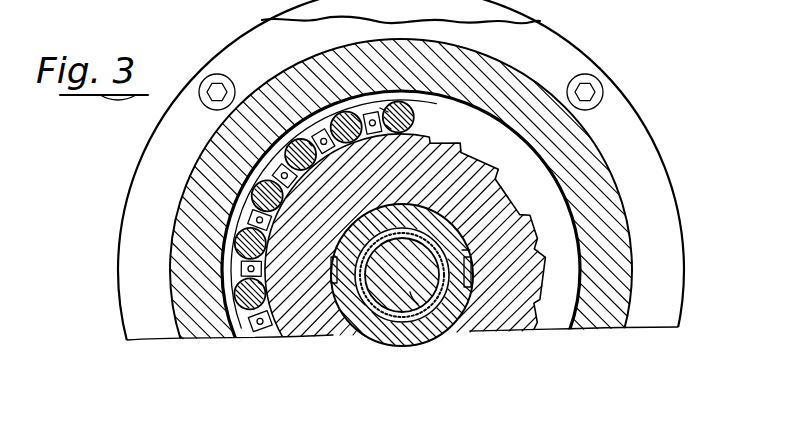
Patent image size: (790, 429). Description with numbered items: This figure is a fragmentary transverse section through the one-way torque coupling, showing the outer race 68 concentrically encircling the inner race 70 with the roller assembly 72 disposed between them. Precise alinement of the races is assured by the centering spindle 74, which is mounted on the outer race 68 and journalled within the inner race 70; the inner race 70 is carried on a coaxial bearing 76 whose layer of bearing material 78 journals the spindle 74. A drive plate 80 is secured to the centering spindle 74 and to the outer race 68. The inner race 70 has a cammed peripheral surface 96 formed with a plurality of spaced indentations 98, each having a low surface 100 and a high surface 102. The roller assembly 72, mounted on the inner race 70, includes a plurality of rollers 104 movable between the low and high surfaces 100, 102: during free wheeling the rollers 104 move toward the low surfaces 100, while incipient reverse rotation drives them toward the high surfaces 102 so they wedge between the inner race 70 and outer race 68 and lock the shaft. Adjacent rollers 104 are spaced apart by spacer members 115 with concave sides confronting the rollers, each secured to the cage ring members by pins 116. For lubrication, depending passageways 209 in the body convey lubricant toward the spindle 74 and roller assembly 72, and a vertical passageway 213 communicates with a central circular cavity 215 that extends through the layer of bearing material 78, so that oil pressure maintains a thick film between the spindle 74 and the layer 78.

The outer race 68 is at (216, 322).
The inner race 70 is at (292, 337).
The roller assembly 72 is at (240, 345).
The centering spindle 74 is at (406, 248).
The bearing 76 is at (394, 347).
The layer of bearing material 78 is at (433, 312).
The drive plate 80 is at (635, 183).
The cammed peripheral surface 96 is at (542, 296).
The indentations 98 is at (551, 239).
The low surface 100 is at (262, 253).
The high surface 102 is at (246, 271).
The rollers 104 is at (252, 192).
The spacer member 115 is at (380, 108).
The pins 116 is at (371, 119).
The depending passageways 209 is at (325, 296).
The vertical passageway 213 is at (464, 250).
The central circular cavity 215 is at (410, 292).